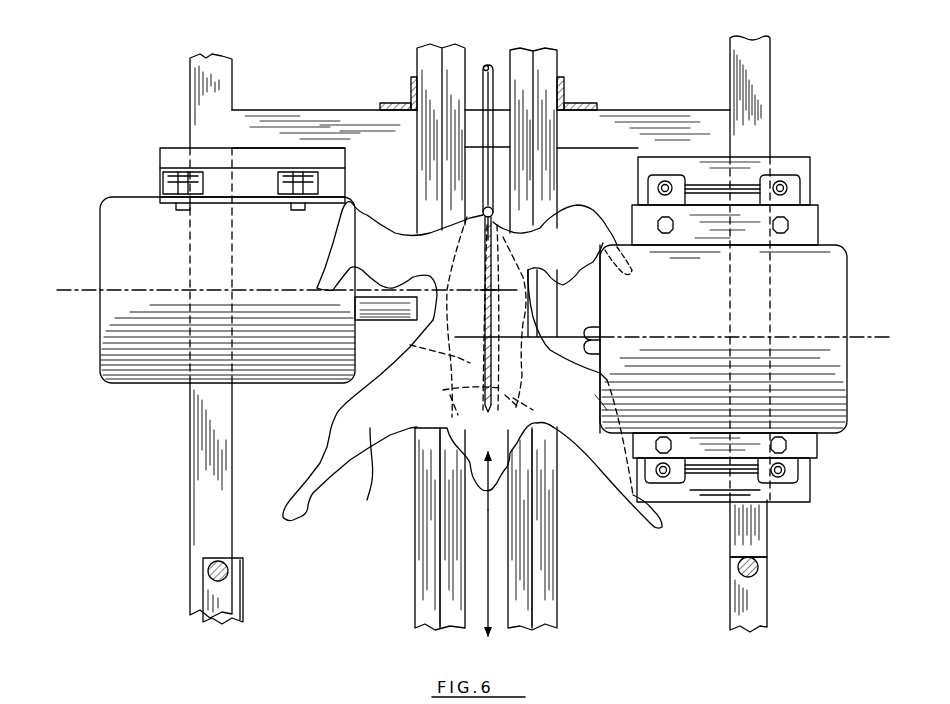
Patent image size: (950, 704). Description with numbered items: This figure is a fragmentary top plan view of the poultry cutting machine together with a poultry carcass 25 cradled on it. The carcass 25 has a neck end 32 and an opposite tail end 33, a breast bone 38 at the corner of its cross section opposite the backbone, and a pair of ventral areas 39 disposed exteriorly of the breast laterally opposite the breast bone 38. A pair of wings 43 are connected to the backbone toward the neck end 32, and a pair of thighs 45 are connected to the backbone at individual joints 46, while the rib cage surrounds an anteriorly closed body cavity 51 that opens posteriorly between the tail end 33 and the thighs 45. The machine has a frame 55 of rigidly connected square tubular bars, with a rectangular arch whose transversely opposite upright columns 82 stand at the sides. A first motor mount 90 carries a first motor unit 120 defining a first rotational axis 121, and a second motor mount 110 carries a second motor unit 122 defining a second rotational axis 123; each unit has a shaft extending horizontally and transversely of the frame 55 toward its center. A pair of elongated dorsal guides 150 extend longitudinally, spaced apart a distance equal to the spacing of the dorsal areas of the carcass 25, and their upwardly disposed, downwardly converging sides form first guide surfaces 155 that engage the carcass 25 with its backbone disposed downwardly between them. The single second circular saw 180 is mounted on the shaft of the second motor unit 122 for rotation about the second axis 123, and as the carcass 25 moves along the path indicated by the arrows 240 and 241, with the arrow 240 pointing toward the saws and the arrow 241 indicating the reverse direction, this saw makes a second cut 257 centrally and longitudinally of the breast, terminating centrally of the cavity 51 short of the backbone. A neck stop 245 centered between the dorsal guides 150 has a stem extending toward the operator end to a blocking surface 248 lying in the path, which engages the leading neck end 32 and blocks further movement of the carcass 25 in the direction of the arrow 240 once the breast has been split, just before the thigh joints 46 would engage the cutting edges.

The poultry carcass 25 is at (327, 435).
The neck end 32 is at (487, 217).
The tail end 33 is at (507, 443).
The breast bone 38 is at (500, 327).
The ventral areas 39 is at (517, 307).
The wings 43 is at (373, 245).
The thighs 45 is at (368, 498).
The joints 46 is at (448, 405).
The body cavity 51 is at (410, 345).
The frame 55 is at (780, 98).
The upright columns 82 is at (220, 582).
The first motor mount 90 is at (153, 180).
The second motor mount 110 is at (824, 186).
The first motor unit 120 is at (88, 359).
The first rotational axis 121 is at (77, 290).
The second motor unit 122 is at (855, 263).
The second rotational axis 123 is at (870, 337).
The dorsal guides 150 is at (405, 600).
The first guide surfaces 155 is at (455, 543).
The single second circular saw 180 is at (500, 282).
The arrow indicating first direction 240 is at (493, 497).
The arrow indicating reverse direction 241 is at (493, 570).
The neck stop 245 is at (497, 50).
The blocking surface 248 is at (495, 237).
The second cut 257 is at (505, 228).